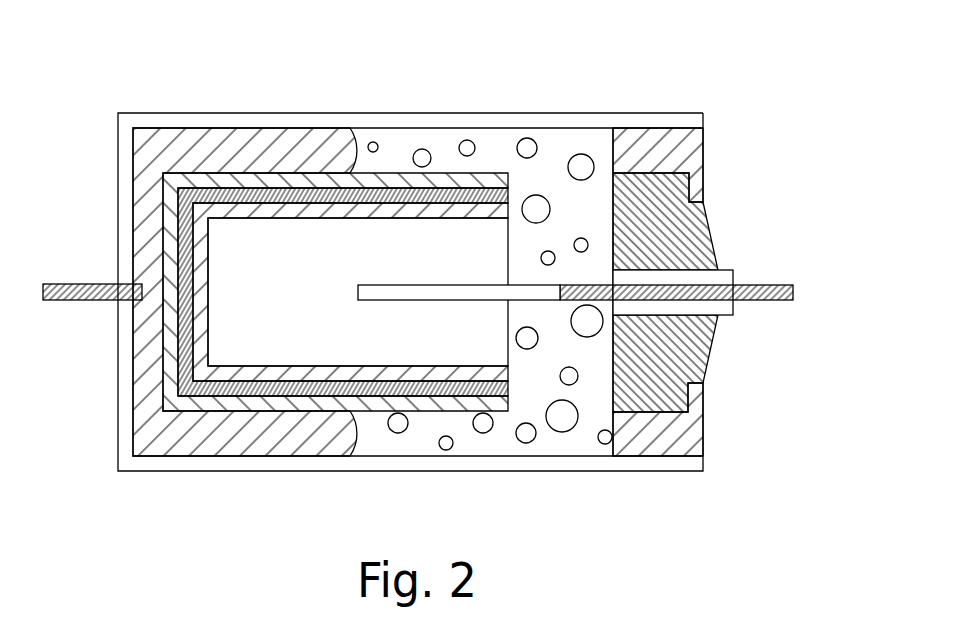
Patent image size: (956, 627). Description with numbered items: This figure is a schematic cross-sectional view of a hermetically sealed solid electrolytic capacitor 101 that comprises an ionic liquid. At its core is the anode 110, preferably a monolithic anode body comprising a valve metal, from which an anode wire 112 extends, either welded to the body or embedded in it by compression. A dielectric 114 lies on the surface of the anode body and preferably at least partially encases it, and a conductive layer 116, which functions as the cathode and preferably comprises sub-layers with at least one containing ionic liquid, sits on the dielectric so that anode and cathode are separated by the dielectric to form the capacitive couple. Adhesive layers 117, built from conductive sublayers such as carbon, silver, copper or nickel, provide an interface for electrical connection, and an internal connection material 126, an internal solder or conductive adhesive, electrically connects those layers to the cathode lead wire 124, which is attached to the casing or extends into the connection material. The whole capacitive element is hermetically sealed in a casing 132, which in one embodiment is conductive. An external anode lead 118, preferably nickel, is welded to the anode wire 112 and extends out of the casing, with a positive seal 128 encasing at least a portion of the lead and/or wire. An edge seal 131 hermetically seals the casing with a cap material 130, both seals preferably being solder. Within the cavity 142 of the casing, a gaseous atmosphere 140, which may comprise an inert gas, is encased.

The hermetically sealed capacitor 101 is at (668, 98).
The anode 110 is at (298, 290).
The anode wire 112 is at (453, 293).
The dielectric 114 is at (297, 210).
The conductive layer 116 is at (233, 200).
The adhesive layers 117 is at (212, 180).
The external anode lead 118 is at (765, 293).
The cathode lead wire 124 is at (77, 295).
The internal connection material 126 is at (147, 197).
The positive seal 128 is at (722, 308).
The cap material 130 is at (687, 153).
The edge seal 131 is at (697, 237).
The casing 132 is at (633, 463).
The bubbles / voids 140 is at (524, 140).
The cavity 142 is at (561, 146).